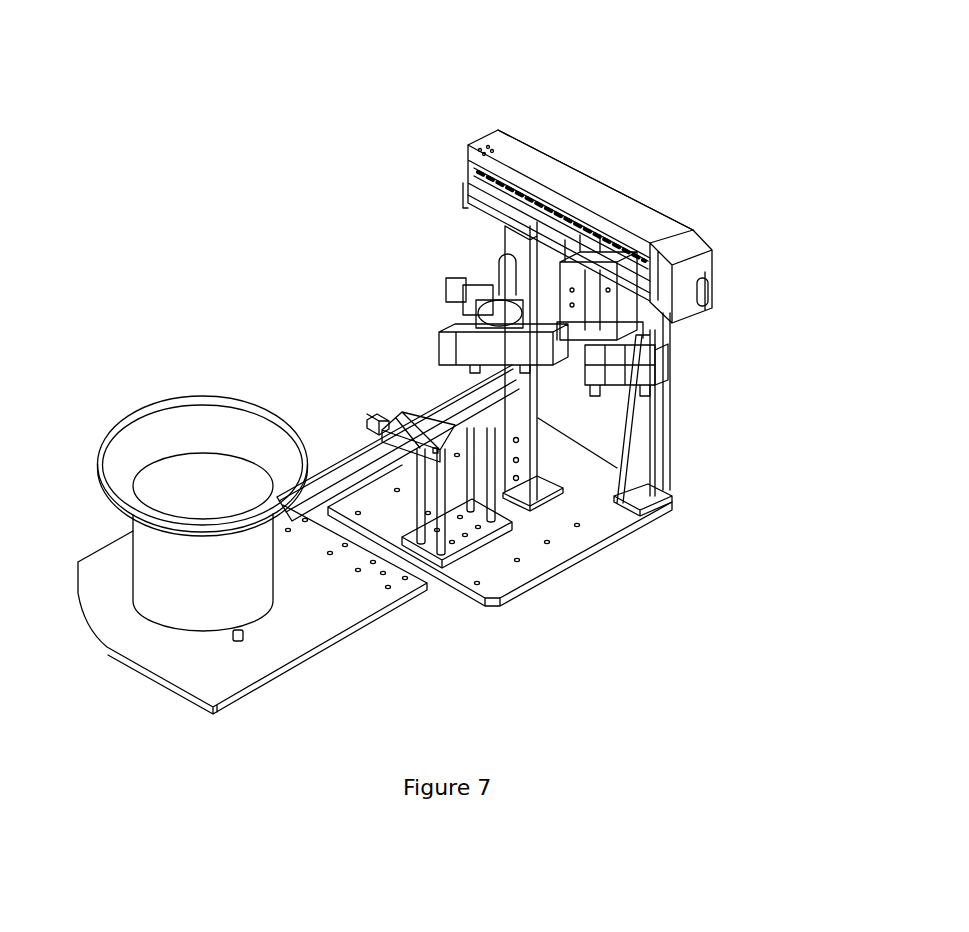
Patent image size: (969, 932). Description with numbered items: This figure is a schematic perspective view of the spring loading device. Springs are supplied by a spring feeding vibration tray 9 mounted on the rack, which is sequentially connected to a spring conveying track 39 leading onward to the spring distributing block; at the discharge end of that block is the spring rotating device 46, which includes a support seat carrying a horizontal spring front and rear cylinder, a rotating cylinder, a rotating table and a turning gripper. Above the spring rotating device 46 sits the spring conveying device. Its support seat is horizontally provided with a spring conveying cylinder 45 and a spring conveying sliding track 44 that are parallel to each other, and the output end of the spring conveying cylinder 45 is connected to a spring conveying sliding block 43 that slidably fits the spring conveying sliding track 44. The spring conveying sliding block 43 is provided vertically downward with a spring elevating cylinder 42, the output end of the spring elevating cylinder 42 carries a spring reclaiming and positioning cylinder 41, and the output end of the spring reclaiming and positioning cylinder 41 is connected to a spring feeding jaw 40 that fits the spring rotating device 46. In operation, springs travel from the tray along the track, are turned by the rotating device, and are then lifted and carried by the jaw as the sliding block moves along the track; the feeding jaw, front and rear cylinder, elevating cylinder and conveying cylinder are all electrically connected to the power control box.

The spring feeding vibration tray 9 is at (218, 493).
The spring conveying track 39 is at (413, 440).
The spring feeding jaw 40 is at (663, 383).
The spring reclaiming and positioning cylinder 41 is at (667, 343).
The spring elevating cylinder 42 is at (650, 244).
The spring conveying sliding block 43 is at (619, 228).
The spring conveying sliding track 44 is at (577, 200).
The spring conveying cylinder 45 is at (518, 175).
The spring rotating device 46 is at (455, 285).